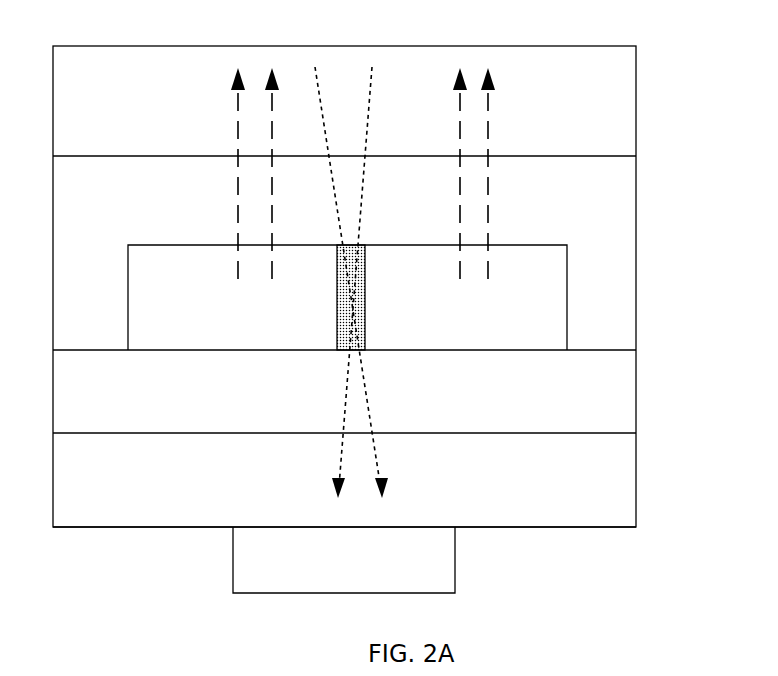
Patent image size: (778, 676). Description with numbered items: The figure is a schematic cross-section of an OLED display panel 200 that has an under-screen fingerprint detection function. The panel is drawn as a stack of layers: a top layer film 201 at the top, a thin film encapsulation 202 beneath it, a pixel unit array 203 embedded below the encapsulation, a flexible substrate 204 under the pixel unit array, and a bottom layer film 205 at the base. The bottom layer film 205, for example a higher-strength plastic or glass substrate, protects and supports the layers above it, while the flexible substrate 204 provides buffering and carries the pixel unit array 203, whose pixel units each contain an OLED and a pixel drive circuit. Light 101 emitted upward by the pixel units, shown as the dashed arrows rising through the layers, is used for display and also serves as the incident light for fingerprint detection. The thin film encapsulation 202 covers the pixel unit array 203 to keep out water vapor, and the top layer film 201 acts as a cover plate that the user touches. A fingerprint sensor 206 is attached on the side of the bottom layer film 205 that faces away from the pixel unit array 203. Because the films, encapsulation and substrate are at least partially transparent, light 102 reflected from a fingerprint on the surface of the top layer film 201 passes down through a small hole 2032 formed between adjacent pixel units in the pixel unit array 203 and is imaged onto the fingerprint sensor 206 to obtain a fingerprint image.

The OLED display panel 200 is at (627, 36).
The top layer film 201 is at (590, 122).
The thin film encapsulation 202 is at (605, 220).
The pixel unit array 203 is at (518, 320).
The small hole 2032 is at (365, 263).
The flexible substrate 204 is at (583, 408).
The bottom layer film 205 is at (572, 497).
The fingerprint sensor 206 is at (430, 575).
The light emitted by the pixel unit 101 is at (343, 174).
The light for fingerprint detection 102 is at (351, 292).